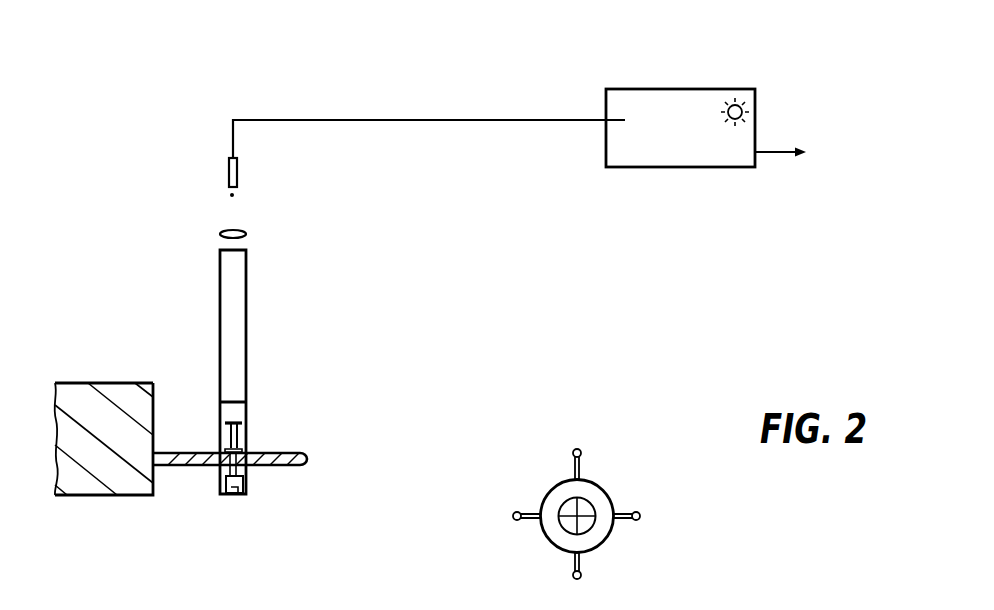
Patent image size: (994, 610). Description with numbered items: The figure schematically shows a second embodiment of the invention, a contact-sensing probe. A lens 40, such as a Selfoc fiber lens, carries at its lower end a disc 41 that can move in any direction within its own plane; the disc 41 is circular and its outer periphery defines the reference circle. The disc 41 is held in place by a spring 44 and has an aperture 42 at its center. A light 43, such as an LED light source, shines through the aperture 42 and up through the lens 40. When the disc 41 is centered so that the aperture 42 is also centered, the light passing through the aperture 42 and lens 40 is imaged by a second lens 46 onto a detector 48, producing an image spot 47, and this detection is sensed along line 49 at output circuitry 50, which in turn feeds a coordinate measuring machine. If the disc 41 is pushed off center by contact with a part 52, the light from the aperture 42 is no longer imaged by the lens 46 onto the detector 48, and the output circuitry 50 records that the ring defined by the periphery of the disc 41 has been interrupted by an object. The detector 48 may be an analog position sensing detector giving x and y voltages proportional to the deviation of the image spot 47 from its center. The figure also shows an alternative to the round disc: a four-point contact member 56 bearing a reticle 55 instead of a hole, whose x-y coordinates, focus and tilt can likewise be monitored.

The lens 40 is at (247, 277).
The disc 41 is at (300, 468).
The aperture 42 is at (233, 458).
The light 43 is at (236, 495).
The spring 44 is at (240, 435).
The lens 46 is at (222, 232).
The image spot 47 is at (234, 195).
The detector 48 is at (229, 165).
The line 49 is at (432, 119).
The output circuitry 50 is at (706, 89).
The part 52 is at (130, 395).
The reticle 55 is at (588, 510).
The 4 point contact member 56 is at (581, 455).